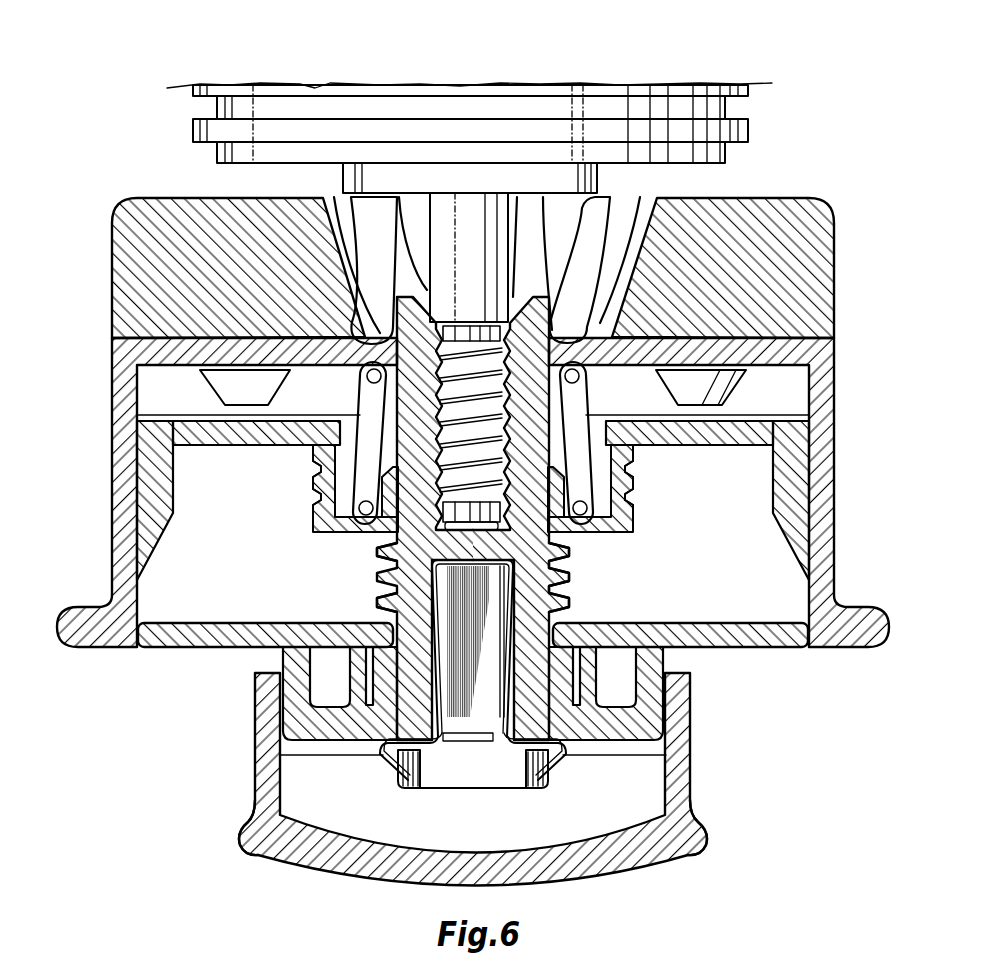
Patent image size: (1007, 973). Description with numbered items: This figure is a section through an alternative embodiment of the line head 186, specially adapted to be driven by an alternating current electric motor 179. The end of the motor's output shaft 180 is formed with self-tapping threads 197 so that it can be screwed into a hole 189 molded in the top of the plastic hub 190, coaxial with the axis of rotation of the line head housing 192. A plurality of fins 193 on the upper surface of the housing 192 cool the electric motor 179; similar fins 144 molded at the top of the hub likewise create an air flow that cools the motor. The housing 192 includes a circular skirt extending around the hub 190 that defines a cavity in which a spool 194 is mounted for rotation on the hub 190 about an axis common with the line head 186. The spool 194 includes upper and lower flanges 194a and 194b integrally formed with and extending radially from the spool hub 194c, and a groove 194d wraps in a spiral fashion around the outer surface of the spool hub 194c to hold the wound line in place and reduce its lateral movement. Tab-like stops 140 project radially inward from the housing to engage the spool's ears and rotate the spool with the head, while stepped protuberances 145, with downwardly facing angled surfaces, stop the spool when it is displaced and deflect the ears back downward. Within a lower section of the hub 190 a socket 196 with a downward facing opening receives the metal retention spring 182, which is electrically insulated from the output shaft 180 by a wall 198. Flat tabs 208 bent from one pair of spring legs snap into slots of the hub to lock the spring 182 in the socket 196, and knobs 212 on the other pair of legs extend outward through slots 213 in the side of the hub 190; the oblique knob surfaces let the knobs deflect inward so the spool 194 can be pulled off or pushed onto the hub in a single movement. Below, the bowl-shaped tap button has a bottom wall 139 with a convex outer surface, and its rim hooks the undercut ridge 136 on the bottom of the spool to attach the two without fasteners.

The ridge 136 is at (519, 779).
The bottom wall 139 is at (708, 836).
The stops 140 is at (168, 490).
The fins 144 is at (471, 399).
The protuberances 145 is at (700, 386).
The electric motor 179 is at (727, 108).
The output shaft 180 is at (497, 217).
The retention spring 182 is at (570, 592).
The line head 186 is at (205, 176).
The hole 189 is at (625, 482).
The hub 190 is at (570, 556).
The line head housing 192 is at (110, 482).
The fins 193 is at (118, 258).
The spool 194 is at (226, 662).
The upper flange 194a is at (722, 650).
The lower flange 194b is at (692, 445).
The spool hub 194c is at (630, 532).
The groove 194d is at (316, 485).
The socket 196 is at (367, 598).
The self-tapping threads 197 is at (540, 400).
The wall 198 is at (365, 560).
The tab 208 is at (478, 746).
The knob 212 is at (380, 757).
The slots 213 is at (440, 790).